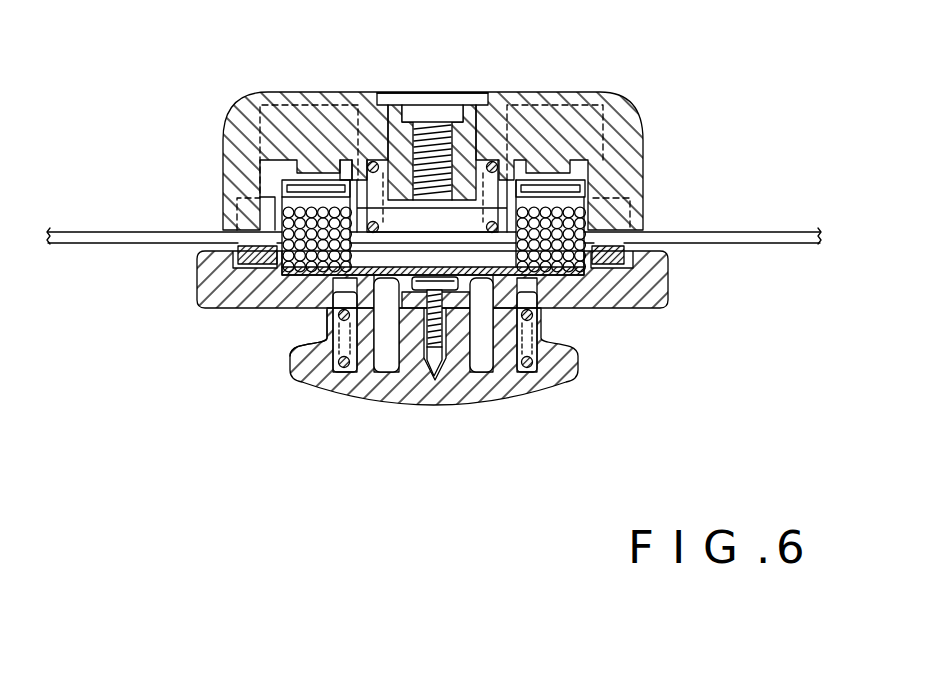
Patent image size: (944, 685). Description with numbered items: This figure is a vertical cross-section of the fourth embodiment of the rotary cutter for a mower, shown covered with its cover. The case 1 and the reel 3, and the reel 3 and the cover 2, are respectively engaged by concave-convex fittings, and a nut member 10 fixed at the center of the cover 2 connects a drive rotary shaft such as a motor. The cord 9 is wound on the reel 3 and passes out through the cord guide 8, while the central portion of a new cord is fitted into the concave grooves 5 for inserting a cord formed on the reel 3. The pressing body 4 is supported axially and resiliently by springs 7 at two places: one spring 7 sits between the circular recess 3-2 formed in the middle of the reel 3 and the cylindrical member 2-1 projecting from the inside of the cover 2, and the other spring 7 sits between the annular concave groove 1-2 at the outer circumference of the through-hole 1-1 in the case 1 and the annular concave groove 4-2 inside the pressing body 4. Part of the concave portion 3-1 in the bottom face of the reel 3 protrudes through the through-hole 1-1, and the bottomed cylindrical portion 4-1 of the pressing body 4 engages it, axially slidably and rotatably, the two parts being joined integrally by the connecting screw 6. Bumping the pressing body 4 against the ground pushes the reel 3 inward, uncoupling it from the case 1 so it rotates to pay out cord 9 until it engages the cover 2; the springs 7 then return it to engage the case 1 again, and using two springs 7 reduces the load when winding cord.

The case 1 is at (223, 308).
The through-hole 1-1 is at (386, 373).
The annular concave groove 1-2 is at (300, 362).
The cover 2 is at (228, 126).
The cylindrical member 2-1 is at (352, 160).
The reel 3 is at (590, 186).
The concave portion 3-1 is at (505, 289).
The circular recess 3-2 is at (514, 190).
The pressing body 4 is at (523, 402).
The bottomed cylindrical portion 4-1 is at (496, 373).
The annular concave groove 4-2 is at (330, 378).
The concave grooves for inserting a cord 5 is at (392, 266).
The connecting screw 6 is at (436, 378).
The spring 7 is at (372, 161).
The cord guide 8 is at (236, 262).
The cord 9 is at (150, 231).
The nut member 10 is at (478, 100).